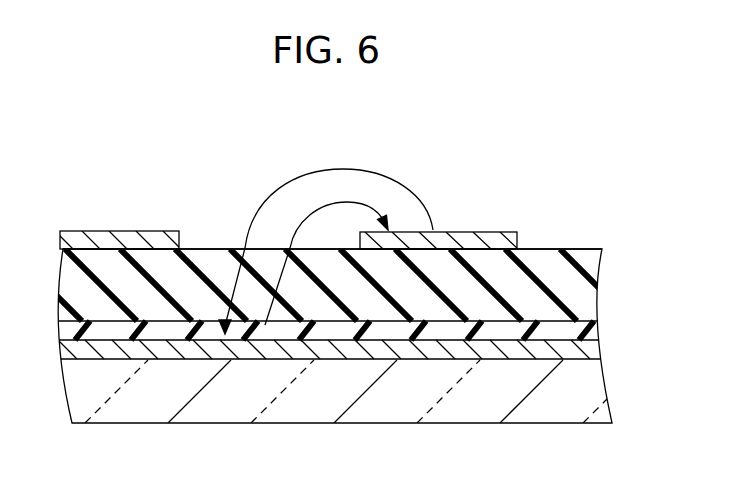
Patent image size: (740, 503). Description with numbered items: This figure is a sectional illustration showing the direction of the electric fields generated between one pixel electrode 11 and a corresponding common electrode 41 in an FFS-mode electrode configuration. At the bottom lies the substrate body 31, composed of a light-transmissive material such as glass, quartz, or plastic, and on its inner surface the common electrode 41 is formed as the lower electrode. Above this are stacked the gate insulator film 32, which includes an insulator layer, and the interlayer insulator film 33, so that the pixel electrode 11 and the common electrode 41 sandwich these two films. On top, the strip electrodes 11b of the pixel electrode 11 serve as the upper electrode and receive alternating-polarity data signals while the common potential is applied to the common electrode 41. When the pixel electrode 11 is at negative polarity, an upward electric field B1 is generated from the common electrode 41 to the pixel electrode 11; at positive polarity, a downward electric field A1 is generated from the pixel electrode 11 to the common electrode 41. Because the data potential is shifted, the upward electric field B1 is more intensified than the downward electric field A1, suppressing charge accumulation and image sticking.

The strip electrode 11b is at (93, 238).
The pixel electrode 11 is at (507, 235).
The downward electric field A1 is at (278, 202).
The upward electric field B1 is at (358, 202).
The interlayer insulator film 33 is at (590, 276).
The gate insulator film 32 is at (590, 328).
The common electrode 41 is at (590, 350).
The substrate body 31 is at (590, 397).